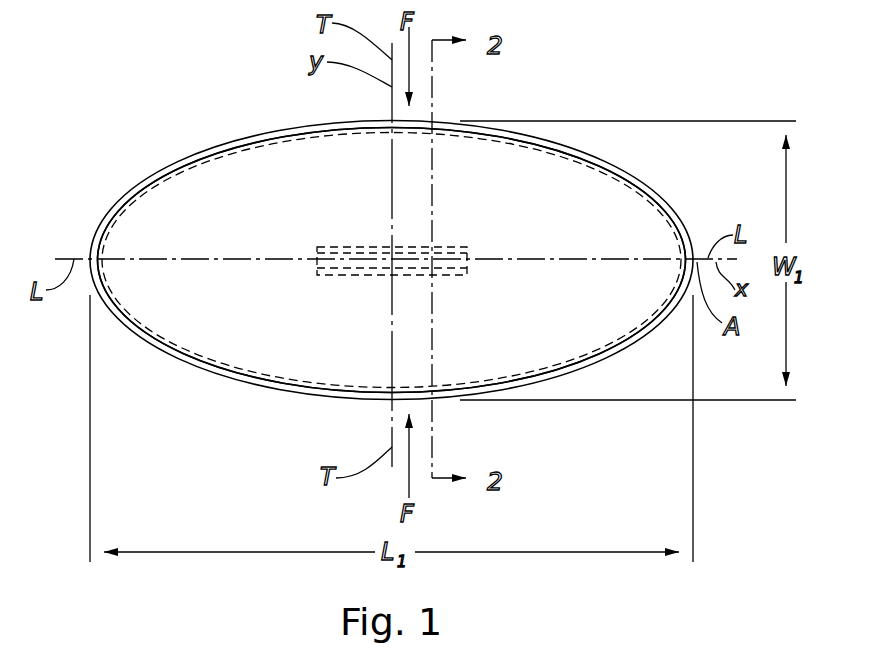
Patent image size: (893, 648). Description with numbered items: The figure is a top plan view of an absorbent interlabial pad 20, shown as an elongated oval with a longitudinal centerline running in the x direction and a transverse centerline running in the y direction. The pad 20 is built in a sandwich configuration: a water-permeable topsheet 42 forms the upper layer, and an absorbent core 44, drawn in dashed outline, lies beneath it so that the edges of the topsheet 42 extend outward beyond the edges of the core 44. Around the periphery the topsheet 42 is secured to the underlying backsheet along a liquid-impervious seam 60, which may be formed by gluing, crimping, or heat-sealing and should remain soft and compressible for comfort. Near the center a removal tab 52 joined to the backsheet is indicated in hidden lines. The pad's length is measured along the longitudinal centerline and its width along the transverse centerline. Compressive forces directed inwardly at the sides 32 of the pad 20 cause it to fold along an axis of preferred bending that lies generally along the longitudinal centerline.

The absorbent interlabial pad 20 is at (128, 125).
The sides of the pad 32 is at (392, 120).
The topsheet 42 is at (577, 182).
The absorbent core 44 is at (237, 373).
The removal tab 52 is at (458, 250).
The seam 60 is at (665, 200).